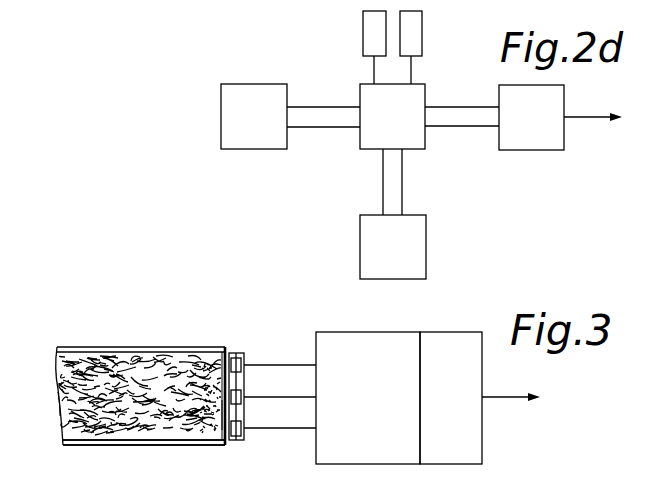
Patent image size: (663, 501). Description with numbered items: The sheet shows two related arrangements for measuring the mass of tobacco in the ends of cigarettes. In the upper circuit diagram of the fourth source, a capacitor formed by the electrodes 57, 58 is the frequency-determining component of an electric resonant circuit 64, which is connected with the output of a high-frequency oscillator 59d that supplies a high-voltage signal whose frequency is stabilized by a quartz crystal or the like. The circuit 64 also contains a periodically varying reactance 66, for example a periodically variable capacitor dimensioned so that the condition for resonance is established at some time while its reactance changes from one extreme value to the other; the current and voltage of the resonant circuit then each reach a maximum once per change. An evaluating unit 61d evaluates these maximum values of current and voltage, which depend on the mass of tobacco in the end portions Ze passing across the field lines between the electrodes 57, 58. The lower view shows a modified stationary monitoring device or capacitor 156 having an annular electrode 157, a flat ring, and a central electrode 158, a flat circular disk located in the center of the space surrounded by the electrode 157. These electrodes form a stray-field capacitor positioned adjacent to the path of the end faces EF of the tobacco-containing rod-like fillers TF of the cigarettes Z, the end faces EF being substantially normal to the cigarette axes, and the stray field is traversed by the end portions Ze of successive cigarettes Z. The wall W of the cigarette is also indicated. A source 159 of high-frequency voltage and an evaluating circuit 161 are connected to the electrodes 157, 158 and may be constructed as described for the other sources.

In FIG. 2D, the electrode 57 is at (372, 28).
In FIG. 2D, the electrode 58 is at (412, 32).
In FIG. 2D, the high-frequency oscillator 59d is at (273, 131).
In FIG. 2D, the electric resonant circuit 64 is at (404, 131).
In FIG. 2D, the evaluating circuit 61d is at (551, 131).
In FIG. 2D, the periodically varying reactance 66 is at (406, 260).
In FIG. 3, the stationary monitoring device or capacitor 156 is at (289, 294).
In FIG. 3, the annular electrode 157 is at (245, 360).
In FIG. 3, the central electrode 158 is at (237, 396).
In FIG. 3, the source of high-frequency voltage 159 is at (372, 410).
In FIG. 3, the evaluating circuit 161 is at (465, 410).
In FIG. 3, the cigarette Z is at (106, 343).
In FIG. 3, the end portion Ze is at (215, 359).
In FIG. 3, the tobacco-containing rod-like filler TF is at (72, 388).
In FIG. 3, the cylinder wall W is at (85, 442).
In FIG. 3, the end face EF is at (223, 414).